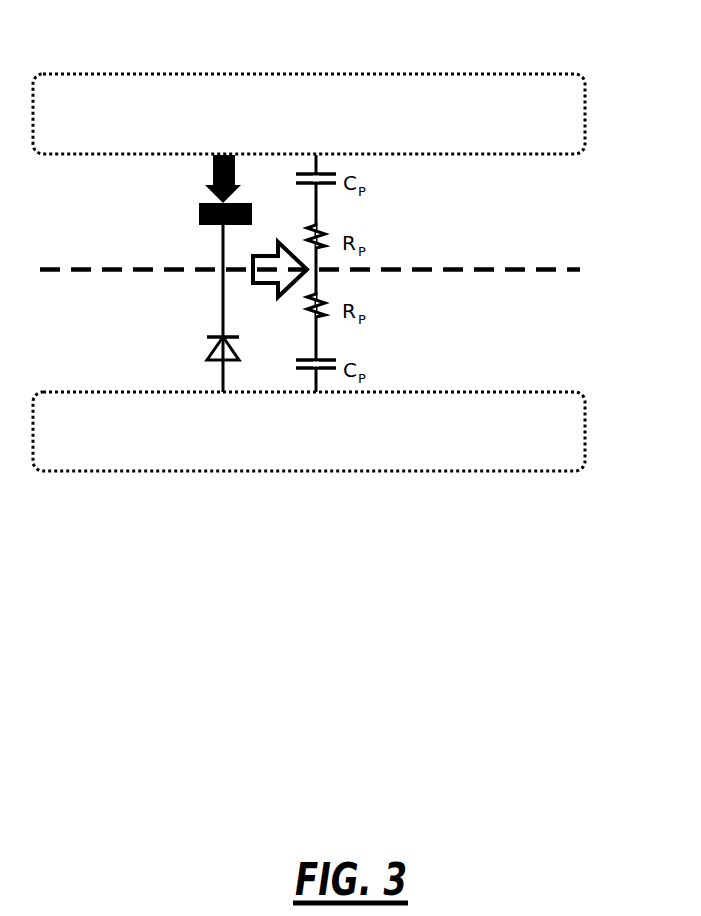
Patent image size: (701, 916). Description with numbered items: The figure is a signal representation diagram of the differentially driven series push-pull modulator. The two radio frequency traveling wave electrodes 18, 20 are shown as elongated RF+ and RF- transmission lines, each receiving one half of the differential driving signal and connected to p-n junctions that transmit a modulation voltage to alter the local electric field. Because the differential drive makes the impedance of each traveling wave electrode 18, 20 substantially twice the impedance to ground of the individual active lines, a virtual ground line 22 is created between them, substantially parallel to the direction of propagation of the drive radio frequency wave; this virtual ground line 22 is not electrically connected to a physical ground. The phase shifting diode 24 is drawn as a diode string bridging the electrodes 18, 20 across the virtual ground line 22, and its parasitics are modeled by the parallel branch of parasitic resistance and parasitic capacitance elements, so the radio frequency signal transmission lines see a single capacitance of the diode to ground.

The radio frequency traveling wave electrode 18 is at (438, 74).
The radio frequency traveling wave electrode 20 is at (498, 471).
The virtual ground line 22 is at (540, 271).
The phase shifting diode 24 is at (223, 282).